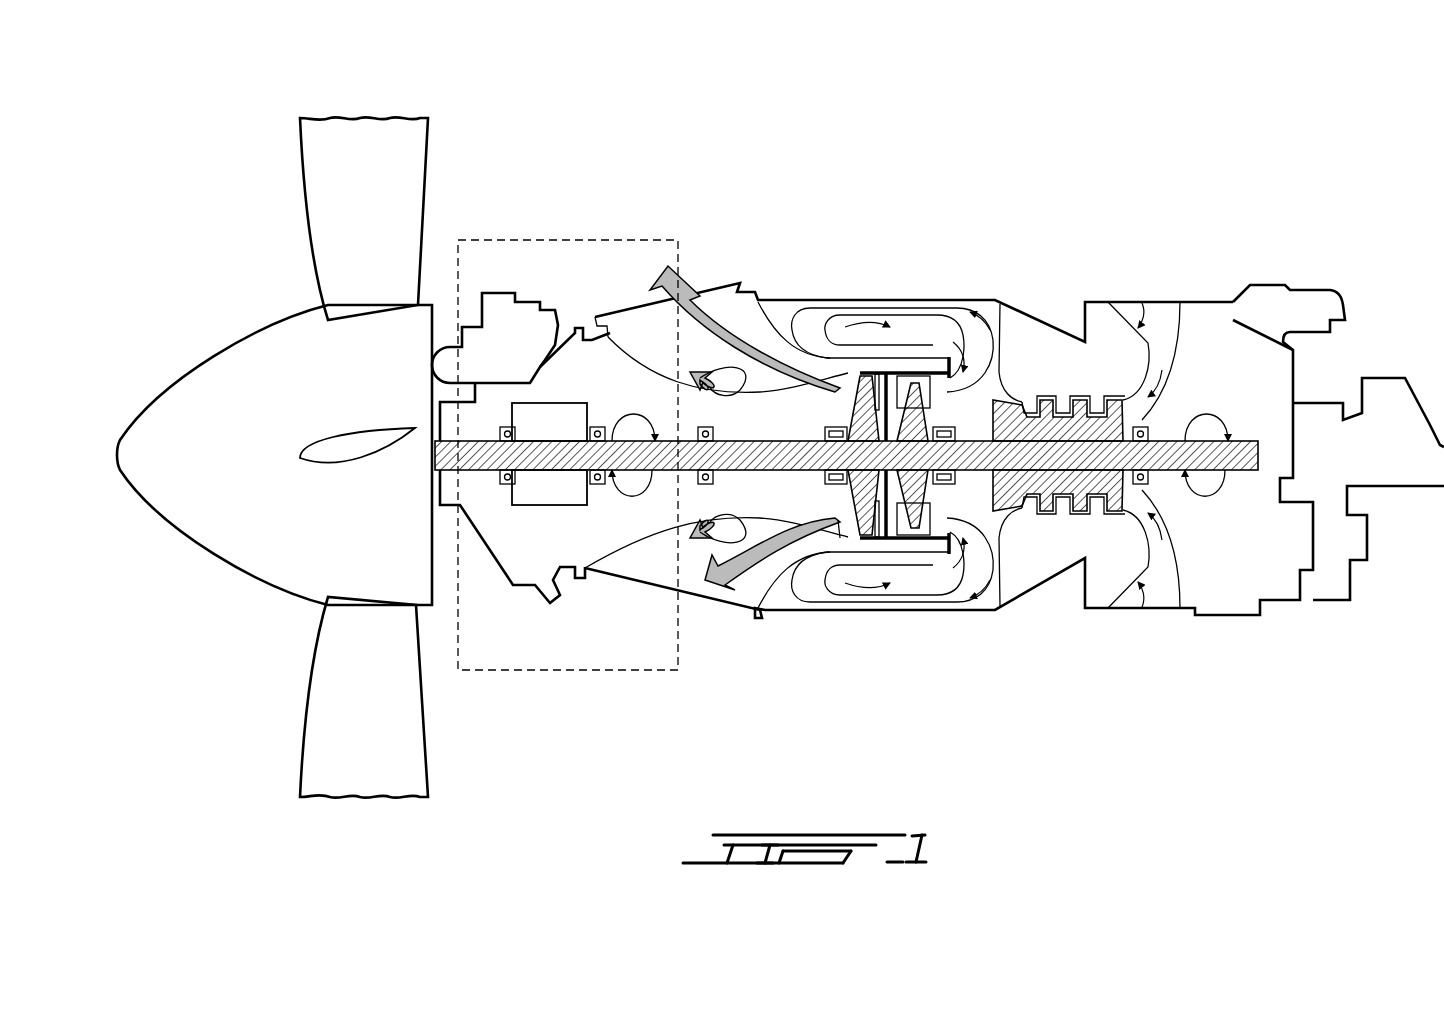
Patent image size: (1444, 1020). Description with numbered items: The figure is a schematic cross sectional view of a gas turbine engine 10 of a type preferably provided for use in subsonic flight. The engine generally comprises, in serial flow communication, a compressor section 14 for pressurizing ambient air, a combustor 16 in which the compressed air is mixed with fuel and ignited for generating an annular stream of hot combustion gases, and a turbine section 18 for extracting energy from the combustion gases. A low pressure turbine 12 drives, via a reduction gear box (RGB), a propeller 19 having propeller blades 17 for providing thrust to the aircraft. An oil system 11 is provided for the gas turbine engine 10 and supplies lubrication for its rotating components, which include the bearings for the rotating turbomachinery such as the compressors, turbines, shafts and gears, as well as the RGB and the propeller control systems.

The gas turbine engine 10 is at (1160, 173).
The oil system 11 is at (592, 236).
The low pressure turbine 12 is at (858, 375).
The compressor section 14 is at (1060, 382).
The combustor 16 is at (897, 318).
The propeller blades 17 is at (400, 152).
The turbine section 18 is at (882, 530).
The propeller 19 is at (228, 508).